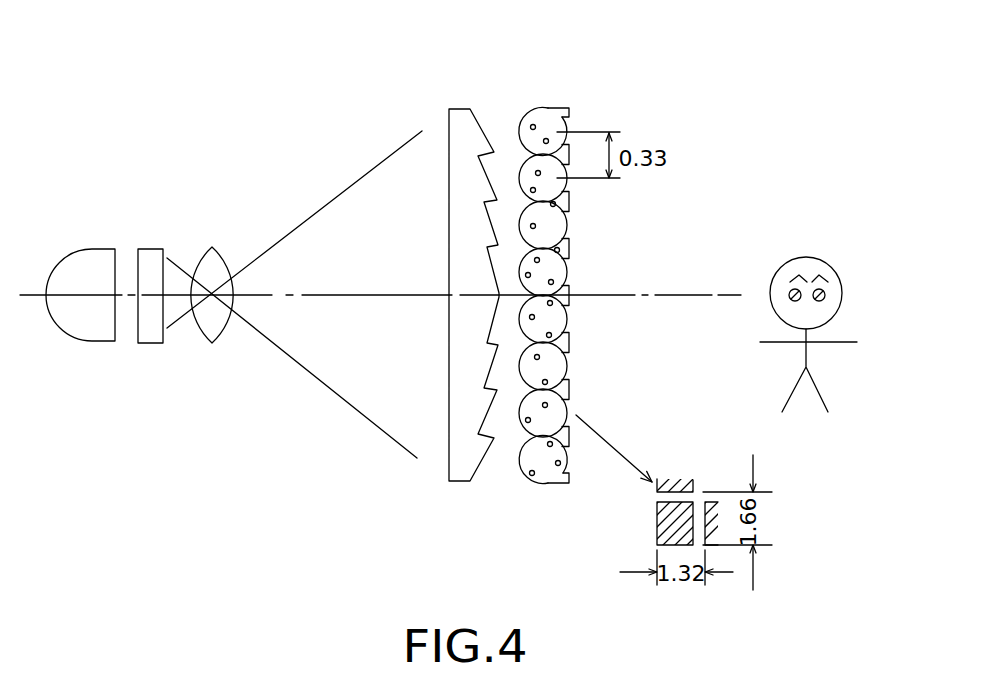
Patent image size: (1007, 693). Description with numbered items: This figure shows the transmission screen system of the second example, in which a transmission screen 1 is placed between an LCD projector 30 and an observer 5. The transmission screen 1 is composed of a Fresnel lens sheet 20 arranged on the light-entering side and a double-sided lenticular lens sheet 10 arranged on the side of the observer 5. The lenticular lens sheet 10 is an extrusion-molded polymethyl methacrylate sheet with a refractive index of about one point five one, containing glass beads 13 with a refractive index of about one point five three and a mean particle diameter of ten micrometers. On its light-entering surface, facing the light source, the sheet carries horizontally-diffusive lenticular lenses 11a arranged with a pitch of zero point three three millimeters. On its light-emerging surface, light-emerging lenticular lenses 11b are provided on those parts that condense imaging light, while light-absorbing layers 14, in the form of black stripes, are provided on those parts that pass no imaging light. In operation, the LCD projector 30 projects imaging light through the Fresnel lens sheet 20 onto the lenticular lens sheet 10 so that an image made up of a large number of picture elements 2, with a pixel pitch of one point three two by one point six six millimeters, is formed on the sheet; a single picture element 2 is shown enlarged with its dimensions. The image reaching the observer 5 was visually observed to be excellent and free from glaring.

The transmission screen 1 is at (492, 92).
The double-sided lenticular lens sheet 10 is at (563, 313).
The horizontally-diffusive lenticular lenses 11a is at (520, 138).
The light-emerging lenticular lenses 11b is at (566, 226).
The glass beads 13 is at (530, 477).
The light-absorbing layers 14 is at (572, 255).
The Fresnel lens sheet 20 is at (462, 360).
The LCD projector 30 is at (58, 363).
The picture elements 2 is at (667, 502).
The observer 5 is at (830, 260).